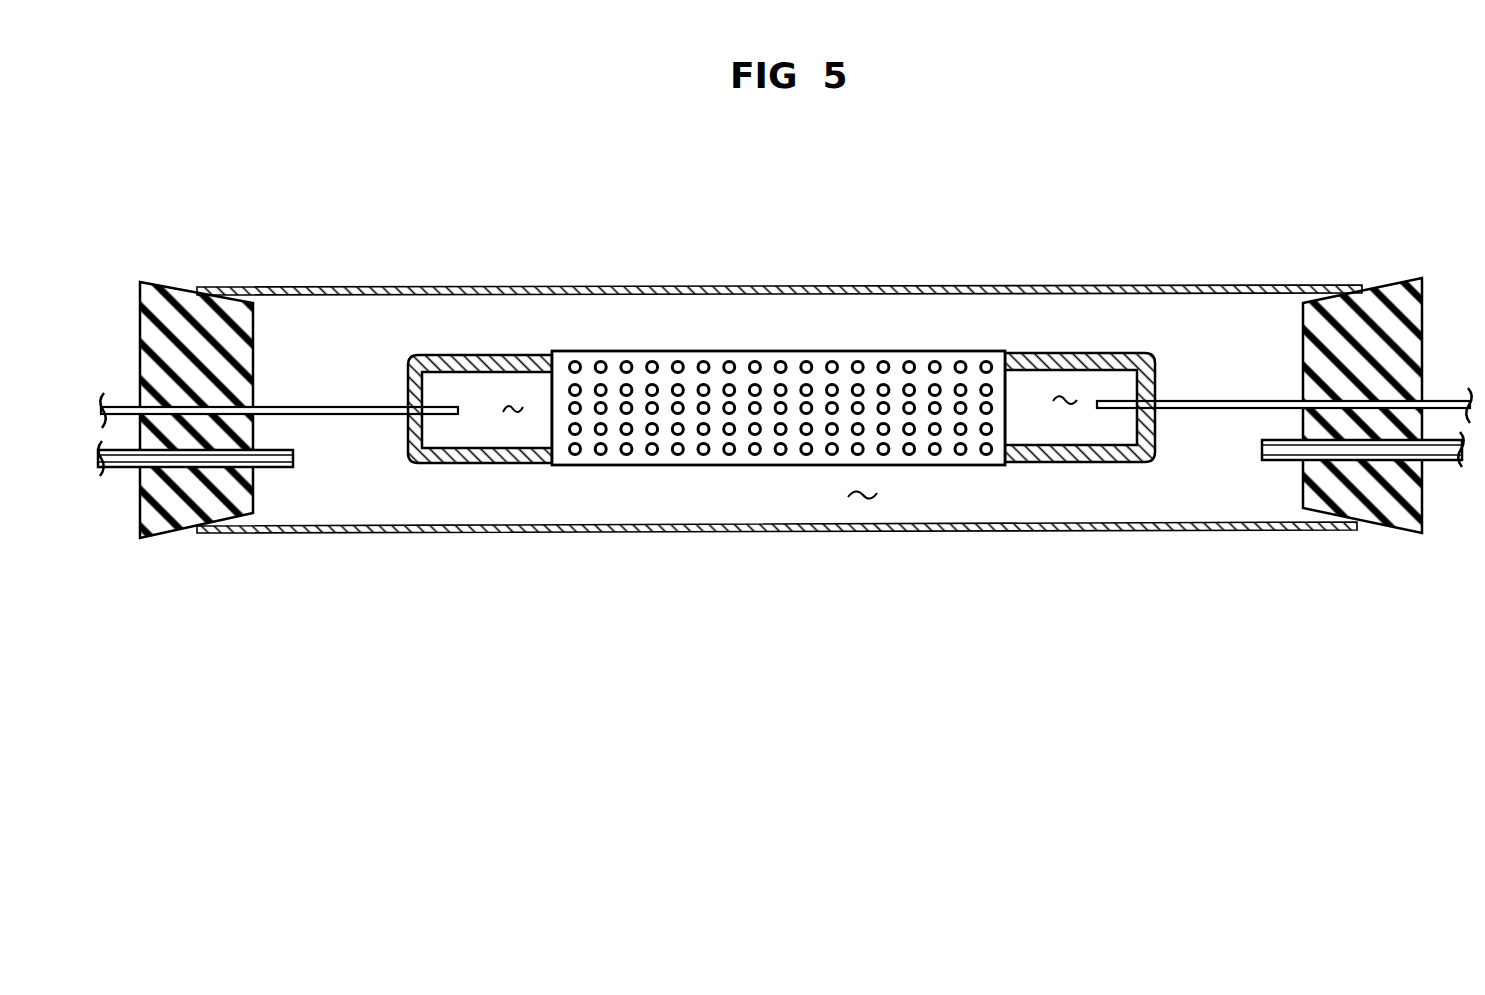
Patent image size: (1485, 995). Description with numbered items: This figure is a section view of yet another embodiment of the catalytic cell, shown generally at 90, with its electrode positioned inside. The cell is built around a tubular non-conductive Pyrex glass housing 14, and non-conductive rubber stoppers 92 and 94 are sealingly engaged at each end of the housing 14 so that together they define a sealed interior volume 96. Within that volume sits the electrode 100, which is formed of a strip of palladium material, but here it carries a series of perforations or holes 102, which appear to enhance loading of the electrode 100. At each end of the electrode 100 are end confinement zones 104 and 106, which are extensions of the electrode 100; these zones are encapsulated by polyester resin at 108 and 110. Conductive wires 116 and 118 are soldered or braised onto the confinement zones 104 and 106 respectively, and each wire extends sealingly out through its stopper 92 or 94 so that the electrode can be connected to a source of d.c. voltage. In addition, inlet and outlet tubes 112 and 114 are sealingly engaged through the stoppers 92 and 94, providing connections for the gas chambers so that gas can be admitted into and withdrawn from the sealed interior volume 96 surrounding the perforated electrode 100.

The catalytic cell embodiment 90 is at (858, 287).
The tubular non-conductive Pyrex glass housing 14 is at (993, 285).
The non-conductive rubber stopper 92 is at (258, 332).
The non-conductive rubber stopper 94 is at (1388, 287).
The sealed interior volume 96 is at (852, 502).
The electrode 100 is at (752, 351).
The perforations or holes 102 is at (678, 367).
The end confinement zone 104 is at (510, 413).
The end confinement zone 106 is at (1060, 403).
The polyester resin 108 is at (497, 352).
The polyester resin 110 is at (1140, 353).
The inlet tube 112 is at (272, 467).
The outlet tube 114 is at (1287, 462).
The conductive wire 116 is at (343, 398).
The conductive wire 118 is at (1207, 410).